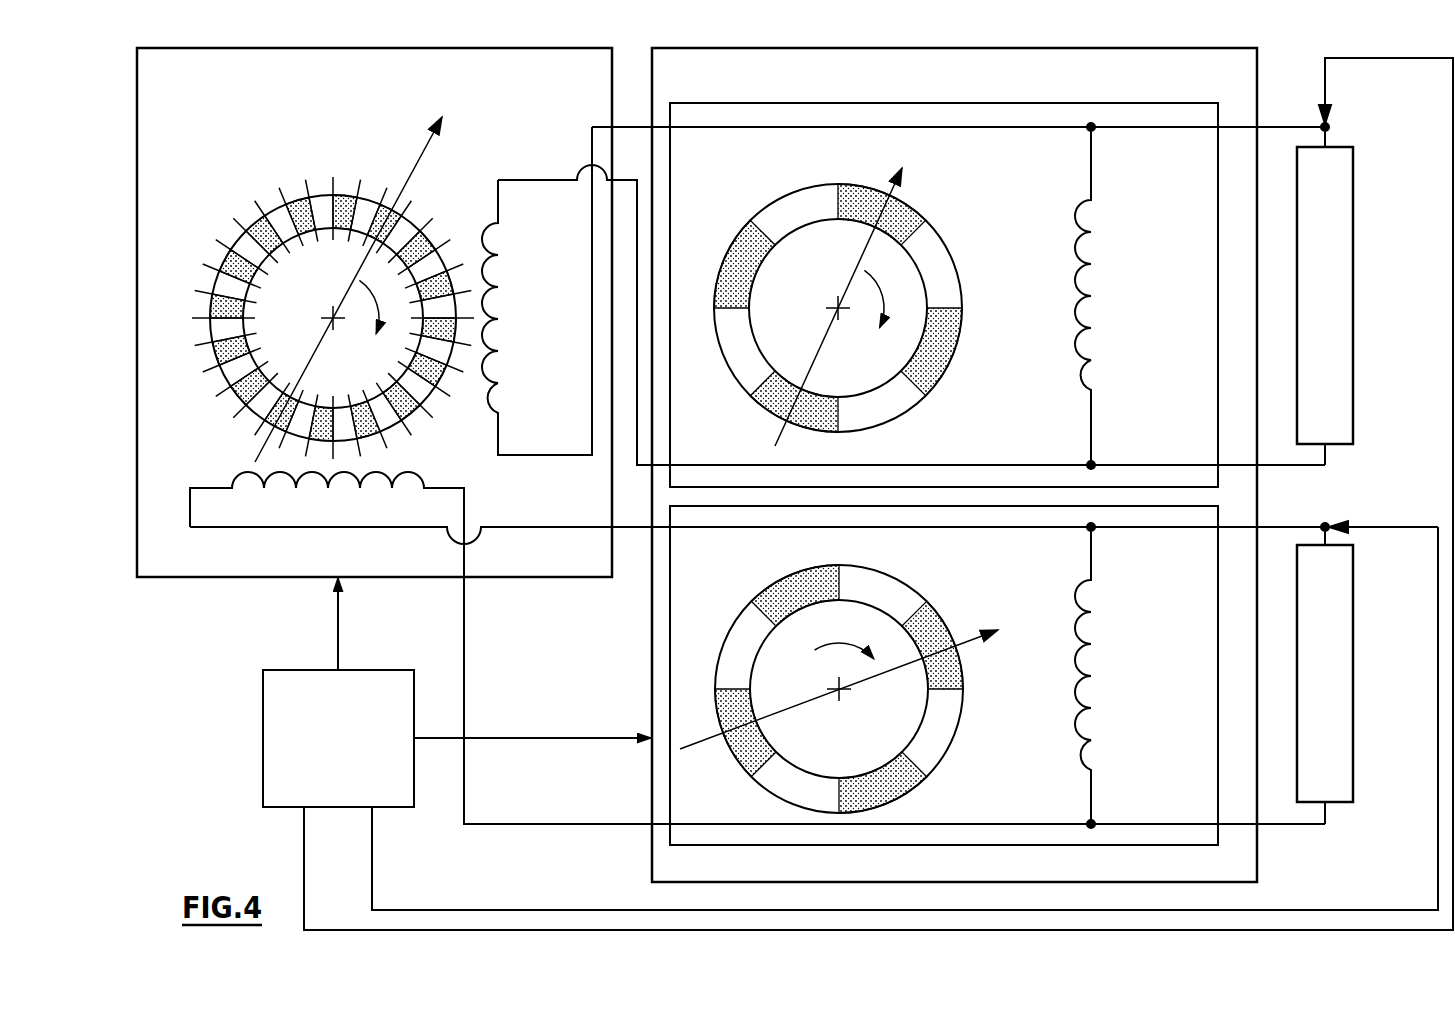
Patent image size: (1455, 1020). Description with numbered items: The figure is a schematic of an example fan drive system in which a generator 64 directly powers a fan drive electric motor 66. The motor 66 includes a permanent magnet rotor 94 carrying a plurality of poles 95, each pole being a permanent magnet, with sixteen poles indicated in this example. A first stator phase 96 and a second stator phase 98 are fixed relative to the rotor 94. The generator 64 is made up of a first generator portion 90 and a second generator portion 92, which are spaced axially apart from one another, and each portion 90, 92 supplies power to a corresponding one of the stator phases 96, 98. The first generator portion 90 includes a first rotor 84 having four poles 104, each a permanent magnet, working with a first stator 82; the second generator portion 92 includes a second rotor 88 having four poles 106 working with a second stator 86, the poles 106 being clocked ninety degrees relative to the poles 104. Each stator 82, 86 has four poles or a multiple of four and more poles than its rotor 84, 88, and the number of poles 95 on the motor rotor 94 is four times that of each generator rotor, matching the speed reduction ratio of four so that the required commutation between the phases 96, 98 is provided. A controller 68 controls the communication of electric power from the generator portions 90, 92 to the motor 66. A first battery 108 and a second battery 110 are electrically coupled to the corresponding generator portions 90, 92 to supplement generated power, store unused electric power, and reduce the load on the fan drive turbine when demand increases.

The generator 64 is at (1215, 78).
The fan drive electric motor 66 is at (153, 78).
The controller 68 is at (325, 771).
The first stator 82 is at (1138, 296).
The first rotor 84 is at (952, 233).
The second stator 86 is at (1179, 675).
The second rotor 88 is at (968, 748).
The first generator portion 90 is at (1200, 520).
The second generator portion 92 is at (1112, 112).
The permanent magnet rotor 94 is at (262, 178).
The poles 95 is at (262, 428).
The first stator phase 96 is at (903, 296).
The second stator phase 98 is at (791, 648).
The poles 104 is at (858, 197).
The poles 106 is at (776, 585).
The first battery 108 is at (1342, 170).
The second battery 110 is at (1342, 570).